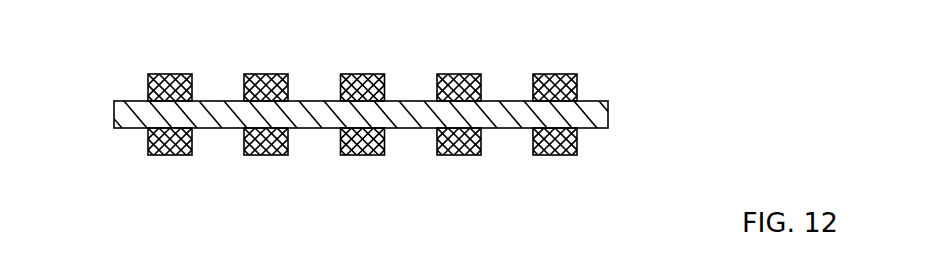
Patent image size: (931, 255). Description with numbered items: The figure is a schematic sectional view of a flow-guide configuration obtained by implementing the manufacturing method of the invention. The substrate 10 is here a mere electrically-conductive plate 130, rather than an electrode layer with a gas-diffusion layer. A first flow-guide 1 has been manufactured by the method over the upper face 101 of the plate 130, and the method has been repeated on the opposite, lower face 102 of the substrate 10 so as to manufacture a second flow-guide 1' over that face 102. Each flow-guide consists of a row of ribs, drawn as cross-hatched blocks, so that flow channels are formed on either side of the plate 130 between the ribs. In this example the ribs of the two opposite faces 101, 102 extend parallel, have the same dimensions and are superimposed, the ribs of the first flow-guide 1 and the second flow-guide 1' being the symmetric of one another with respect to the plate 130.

The first flow-guide 1 is at (414, 110).
The second flow-guide 1' is at (414, 112).
The substrate 10 is at (609, 113).
The electrically-conductive plate 130 is at (414, 103).
The face of the substrate 101 is at (498, 98).
The face of the substrate 102 is at (501, 130).